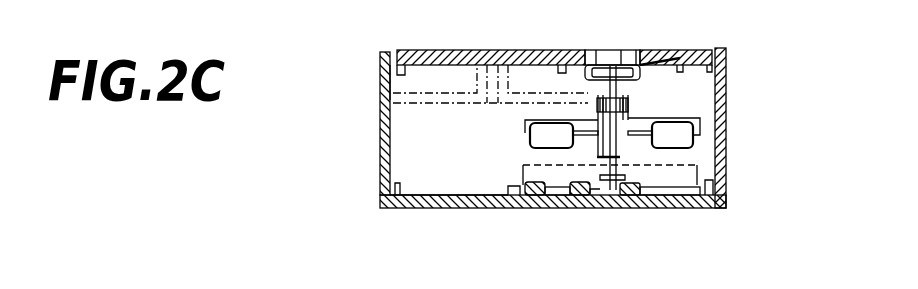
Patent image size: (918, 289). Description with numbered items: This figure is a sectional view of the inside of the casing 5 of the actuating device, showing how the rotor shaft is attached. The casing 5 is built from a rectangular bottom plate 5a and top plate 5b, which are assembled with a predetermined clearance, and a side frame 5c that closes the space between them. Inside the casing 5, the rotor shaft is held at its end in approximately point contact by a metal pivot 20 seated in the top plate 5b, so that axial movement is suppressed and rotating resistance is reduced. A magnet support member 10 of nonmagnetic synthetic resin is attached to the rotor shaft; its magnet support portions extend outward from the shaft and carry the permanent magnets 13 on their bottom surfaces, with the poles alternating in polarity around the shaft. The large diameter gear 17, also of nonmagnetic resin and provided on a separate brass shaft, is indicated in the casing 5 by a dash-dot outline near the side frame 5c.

The casing 5 is at (668, 198).
The bottom plate 5a is at (433, 200).
The top plate 5b is at (445, 50).
The side frame 5c is at (389, 95).
The magnet support member 10 is at (640, 121).
The permanent magnet 13 is at (530, 135).
The large diameter gear 17 is at (421, 102).
The metal pivot 20 is at (657, 50).